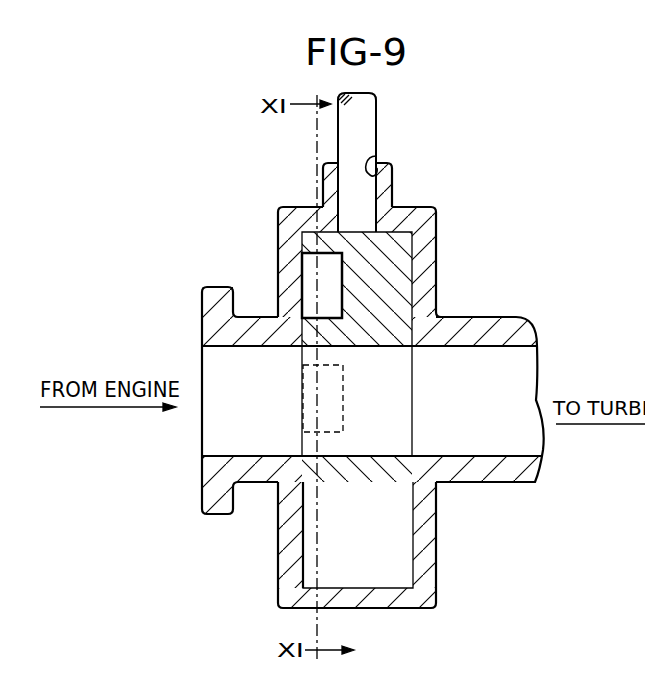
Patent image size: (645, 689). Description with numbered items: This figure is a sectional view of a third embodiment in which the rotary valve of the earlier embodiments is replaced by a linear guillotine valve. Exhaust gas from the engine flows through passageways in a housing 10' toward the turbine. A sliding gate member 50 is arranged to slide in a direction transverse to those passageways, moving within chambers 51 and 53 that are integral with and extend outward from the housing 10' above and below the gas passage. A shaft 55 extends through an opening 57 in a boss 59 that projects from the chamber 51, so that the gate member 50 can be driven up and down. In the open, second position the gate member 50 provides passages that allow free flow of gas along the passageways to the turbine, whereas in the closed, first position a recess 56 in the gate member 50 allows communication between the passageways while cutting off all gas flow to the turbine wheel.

The housing 10' is at (379, 398).
The sliding gate member 50 is at (400, 279).
The chamber 51 is at (438, 224).
The chamber 53 is at (428, 551).
The shaft 55 is at (367, 115).
The recess 56 is at (342, 413).
The opening 57 is at (372, 158).
The boss 59 is at (393, 182).